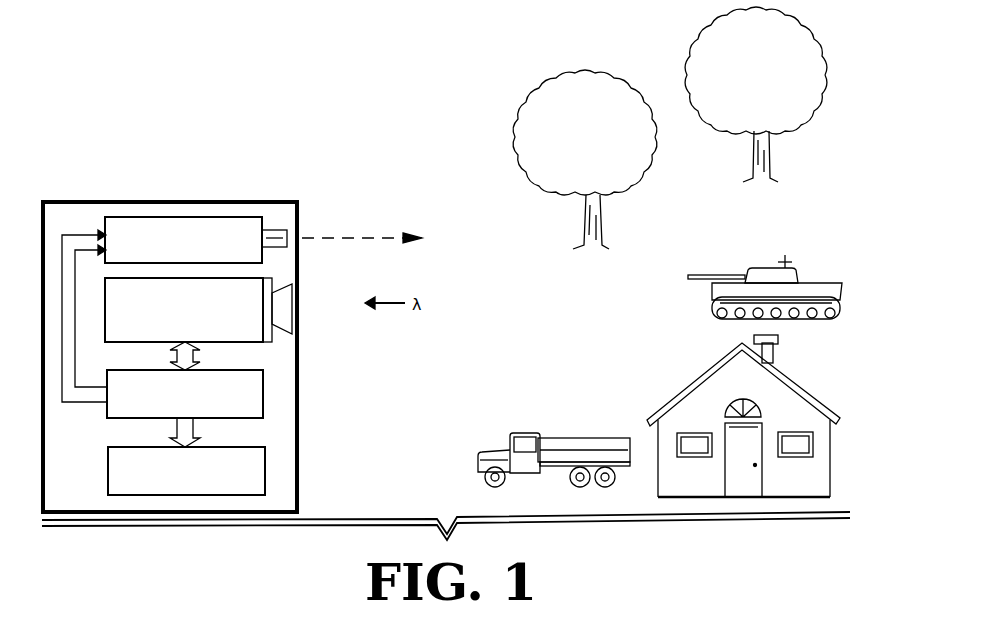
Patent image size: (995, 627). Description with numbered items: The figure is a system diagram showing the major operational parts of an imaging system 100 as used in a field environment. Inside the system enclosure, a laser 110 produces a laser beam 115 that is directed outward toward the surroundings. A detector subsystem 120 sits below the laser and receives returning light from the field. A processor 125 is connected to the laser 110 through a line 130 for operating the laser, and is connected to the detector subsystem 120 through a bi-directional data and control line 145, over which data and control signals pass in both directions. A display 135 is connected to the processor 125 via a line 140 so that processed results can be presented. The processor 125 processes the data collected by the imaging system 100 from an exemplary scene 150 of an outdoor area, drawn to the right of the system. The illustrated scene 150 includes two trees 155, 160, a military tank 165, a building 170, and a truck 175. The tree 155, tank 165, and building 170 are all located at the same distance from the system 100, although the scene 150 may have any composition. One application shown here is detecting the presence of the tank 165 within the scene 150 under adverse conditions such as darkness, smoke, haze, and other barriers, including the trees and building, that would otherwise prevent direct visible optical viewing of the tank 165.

The imaging system 100 is at (171, 200).
The laser 110 is at (233, 216).
The laser beam 115 is at (361, 236).
The detector subsystem 120 is at (274, 341).
The processor 125 is at (265, 391).
The line 130 is at (76, 356).
The display 135 is at (266, 468).
The line 140 is at (195, 431).
The bi-directional data and control line 145 is at (195, 355).
The scene 150 is at (356, 102).
The tree 155 is at (528, 117).
The tree 160 is at (705, 42).
The military tank 165 is at (748, 268).
The building 170 is at (655, 412).
The truck 175 is at (515, 435).